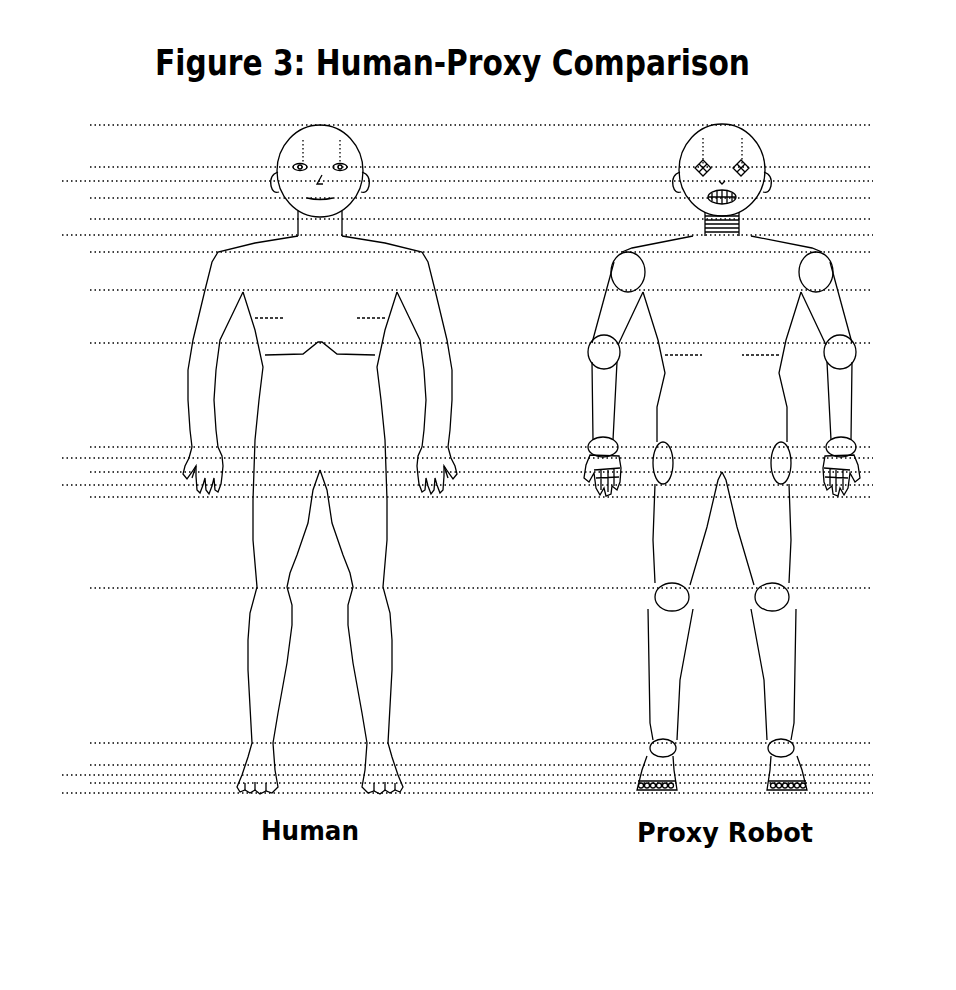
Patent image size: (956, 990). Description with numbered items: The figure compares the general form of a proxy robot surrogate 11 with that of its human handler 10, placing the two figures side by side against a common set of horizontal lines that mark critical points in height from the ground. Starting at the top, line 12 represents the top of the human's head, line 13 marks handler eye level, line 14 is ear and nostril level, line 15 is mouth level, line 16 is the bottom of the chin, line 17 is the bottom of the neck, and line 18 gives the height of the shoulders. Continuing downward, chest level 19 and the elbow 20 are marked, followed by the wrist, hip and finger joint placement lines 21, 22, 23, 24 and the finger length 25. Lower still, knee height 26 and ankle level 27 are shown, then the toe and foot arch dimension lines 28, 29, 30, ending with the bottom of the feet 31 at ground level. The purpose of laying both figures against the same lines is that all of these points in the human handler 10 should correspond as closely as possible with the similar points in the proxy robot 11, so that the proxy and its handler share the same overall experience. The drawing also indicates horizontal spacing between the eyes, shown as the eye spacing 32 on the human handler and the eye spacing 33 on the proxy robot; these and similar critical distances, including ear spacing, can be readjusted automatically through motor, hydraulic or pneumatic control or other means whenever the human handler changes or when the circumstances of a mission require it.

The human handler 10 is at (320, 459).
The proxy robot surrogate 11 is at (722, 457).
The top of head line 12 is at (469, 125).
The eye level line 13 is at (469, 167).
The ear and nostril level line 14 is at (455, 181).
The mouth level line 15 is at (469, 198).
The bottom of chin line 16 is at (469, 219).
The bottom of neck line 17 is at (455, 235).
The shoulder height line 18 is at (469, 252).
The chest level line 19 is at (469, 290).
The elbow line 20 is at (469, 343).
The wrist, hip and finger joint placement line 21 is at (469, 447).
The wrist, hip and finger joint placement line 22 is at (455, 458).
The wrist, hip and finger joint placement line 23 is at (469, 472).
The wrist, hip and finger joint placement line 24 is at (455, 485).
The finger length line 25 is at (469, 497).
The knee height line 26 is at (469, 588).
The ankle level line 27 is at (469, 743).
The toe and foot arch dimension line 28 is at (469, 765).
The toe and foot arch dimension line 29 is at (455, 775).
The toe and foot arch dimension line 30 is at (469, 783).
The bottom of feet line 31 is at (455, 797).
The horizontal eye spacing 32 is at (321, 151).
The horizontal eye spacing 33 is at (722, 151).